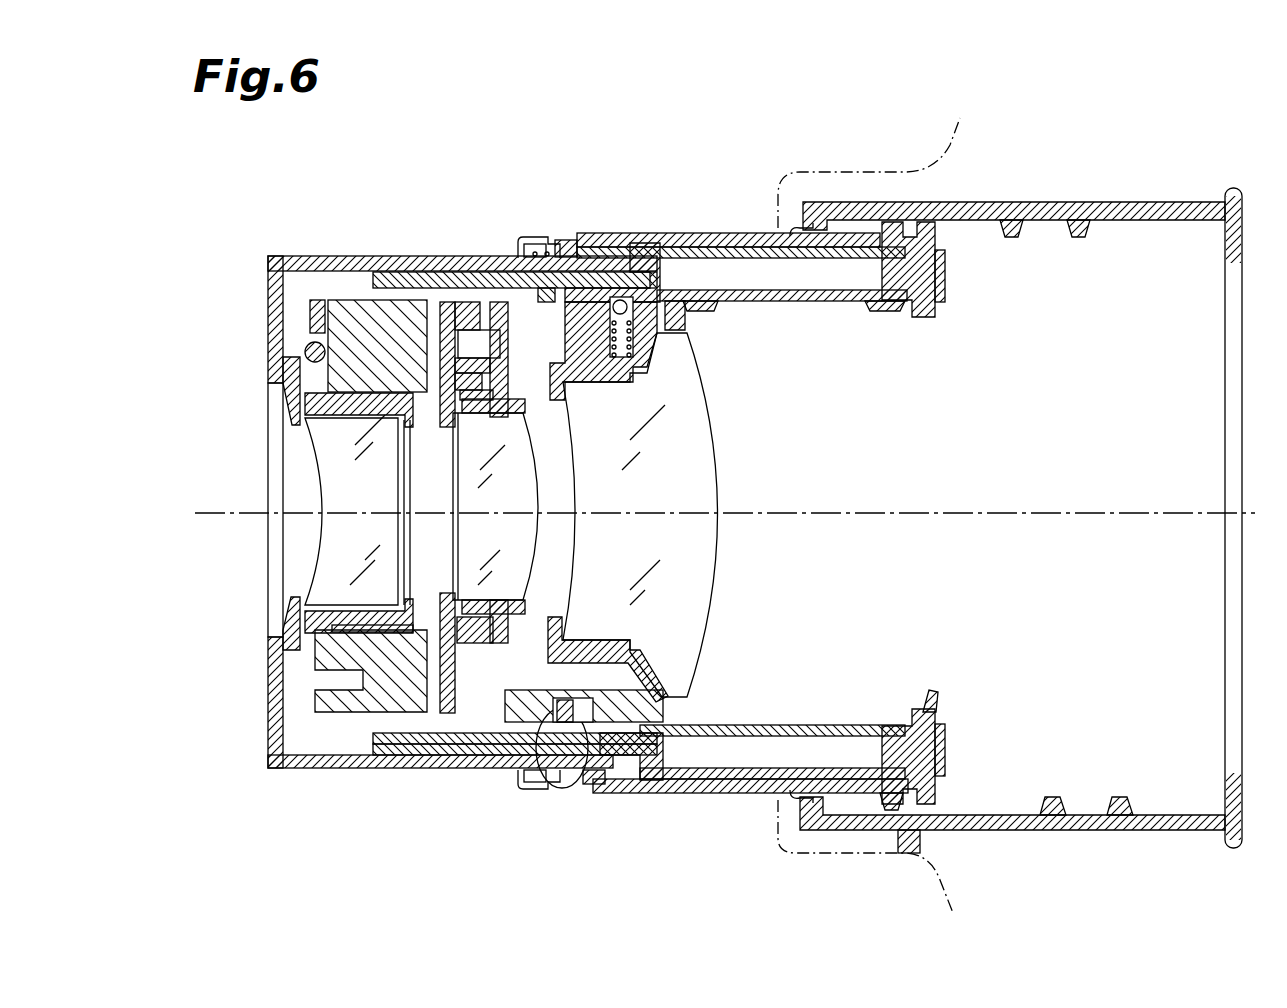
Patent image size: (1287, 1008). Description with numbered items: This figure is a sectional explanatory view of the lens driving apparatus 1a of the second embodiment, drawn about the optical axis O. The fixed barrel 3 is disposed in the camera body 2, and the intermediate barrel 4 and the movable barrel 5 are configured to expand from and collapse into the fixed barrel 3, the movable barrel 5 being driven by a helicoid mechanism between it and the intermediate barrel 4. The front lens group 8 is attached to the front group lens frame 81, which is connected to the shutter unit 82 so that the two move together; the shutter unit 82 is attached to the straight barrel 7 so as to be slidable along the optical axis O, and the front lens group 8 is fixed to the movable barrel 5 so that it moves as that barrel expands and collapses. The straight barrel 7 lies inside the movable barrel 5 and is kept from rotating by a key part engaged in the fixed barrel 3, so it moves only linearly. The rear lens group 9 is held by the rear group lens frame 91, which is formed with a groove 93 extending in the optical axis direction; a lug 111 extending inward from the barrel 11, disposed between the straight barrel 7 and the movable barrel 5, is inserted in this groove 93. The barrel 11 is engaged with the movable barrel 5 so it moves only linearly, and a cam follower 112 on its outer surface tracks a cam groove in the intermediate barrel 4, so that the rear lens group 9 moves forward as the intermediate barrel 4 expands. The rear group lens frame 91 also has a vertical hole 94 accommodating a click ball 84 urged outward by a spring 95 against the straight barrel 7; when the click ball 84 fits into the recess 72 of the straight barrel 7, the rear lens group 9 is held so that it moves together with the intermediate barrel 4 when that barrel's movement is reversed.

The lens driving apparatus 1a is at (377, 181).
The camera body 2 is at (957, 120).
The fixed barrel 3 is at (1048, 202).
The intermediate barrel 4 is at (683, 233).
The movable barrel 5 is at (327, 256).
The straight barrel 7 is at (803, 302).
The recess 72 is at (688, 307).
The front lens group 8 is at (322, 570).
The front group lens frame 81 is at (300, 633).
The shutter unit 82 is at (345, 700).
The rear lens group 9 is at (718, 553).
The rear group lens frame 91 is at (578, 237).
The click ball 84 is at (622, 252).
The groove 93 is at (593, 722).
The vertical hole 94 is at (633, 352).
The spring 95 is at (620, 357).
The barrel 11 is at (445, 272).
The lug 111 is at (555, 700).
The cam follower 112 is at (660, 760).
The optical axis O is at (237, 508).